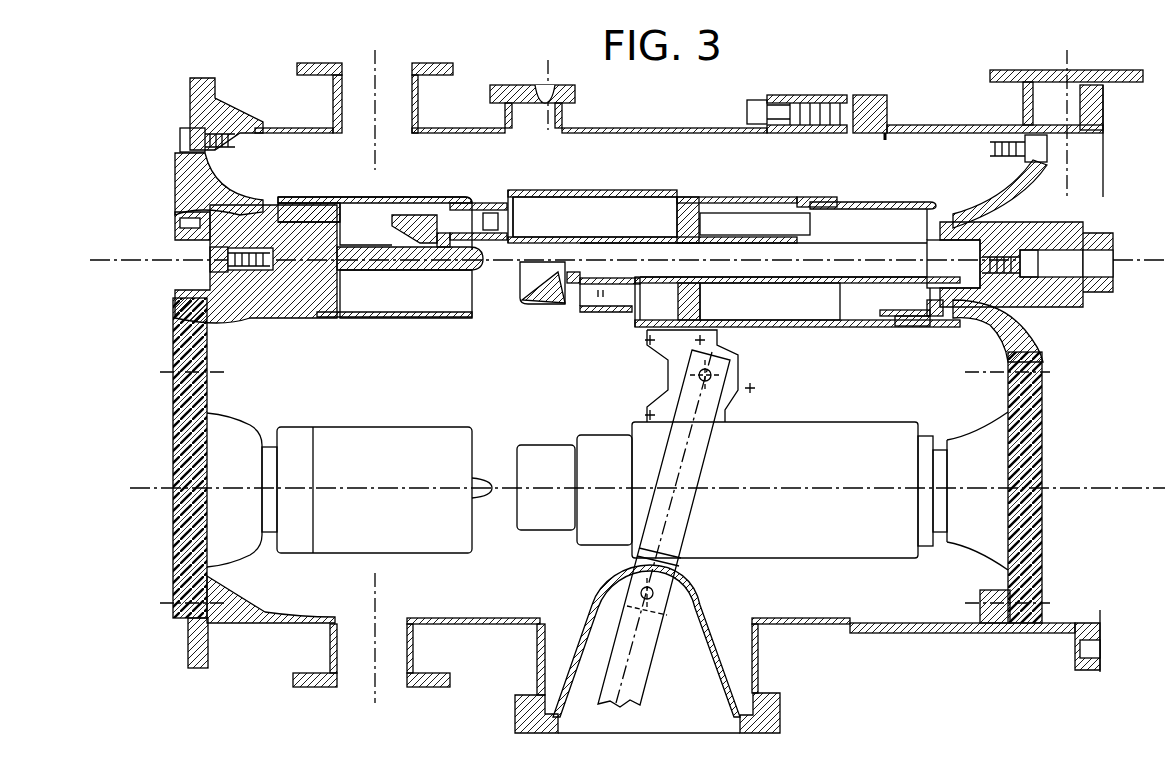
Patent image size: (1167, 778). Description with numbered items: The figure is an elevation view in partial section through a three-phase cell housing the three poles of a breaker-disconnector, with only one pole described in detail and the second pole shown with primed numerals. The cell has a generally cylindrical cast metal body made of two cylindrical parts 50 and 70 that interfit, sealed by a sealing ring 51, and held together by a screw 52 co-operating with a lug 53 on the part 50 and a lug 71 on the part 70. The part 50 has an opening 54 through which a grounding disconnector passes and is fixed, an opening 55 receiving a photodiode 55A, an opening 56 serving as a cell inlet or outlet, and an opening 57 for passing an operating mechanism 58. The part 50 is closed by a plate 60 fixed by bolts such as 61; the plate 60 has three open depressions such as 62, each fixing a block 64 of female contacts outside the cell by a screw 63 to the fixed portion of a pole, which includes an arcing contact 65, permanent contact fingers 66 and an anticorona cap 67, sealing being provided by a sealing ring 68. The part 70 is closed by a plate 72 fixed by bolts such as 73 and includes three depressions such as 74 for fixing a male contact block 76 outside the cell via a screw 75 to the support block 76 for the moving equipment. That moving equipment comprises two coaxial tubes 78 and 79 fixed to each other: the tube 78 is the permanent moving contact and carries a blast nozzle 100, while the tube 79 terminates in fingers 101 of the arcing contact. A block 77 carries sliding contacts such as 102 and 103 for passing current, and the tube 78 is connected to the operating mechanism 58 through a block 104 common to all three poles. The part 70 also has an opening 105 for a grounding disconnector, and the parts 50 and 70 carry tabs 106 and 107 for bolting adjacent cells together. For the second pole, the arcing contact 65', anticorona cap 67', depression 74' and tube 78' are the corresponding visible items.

The cylindrical part 50 is at (636, 128).
The sealing ring 51 is at (885, 134).
The screw 52 is at (832, 98).
The lug 53 is at (785, 97).
The opening 54 is at (395, 85).
The opening 55 is at (560, 75).
The photodiode 55A is at (525, 86).
The opening 56 is at (398, 672).
The opening 57 is at (750, 672).
The operating mechanism 58 is at (660, 605).
The plate 60 is at (192, 406).
The bolt 61 is at (192, 140).
The open depression 62 is at (198, 200).
The screw 63 is at (213, 262).
The block of female contacts 64 is at (192, 228).
The arcing contact 65 is at (410, 275).
The arcing contact 65' is at (491, 469).
The permanent contact fingers 66 is at (415, 197).
The anticorona cap 67 is at (394, 332).
The anticorona cap 67' is at (367, 468).
The sealing ring 68 is at (262, 305).
The cylindrical part 70 is at (948, 125).
The lug 71 is at (873, 96).
The plate 72 is at (1030, 460).
The bolt 73 is at (1045, 156).
The depression 74 is at (994, 345).
The depression 74' is at (955, 465).
The screw 75 is at (1040, 307).
The male contact block 76 is at (1092, 300).
The block 77 is at (856, 202).
The tube 78 is at (734, 259).
The tube 78' is at (725, 474).
The tube 79 is at (580, 240).
The blast nozzle 100 is at (405, 216).
The fingers of the arcing contact 101 is at (445, 205).
The sliding contact 102 is at (800, 197).
The sliding contact 103 is at (690, 230).
The block 104 is at (737, 380).
The opening 105 is at (1023, 100).
The tab 106 is at (190, 110).
The tab 107 is at (1103, 115).